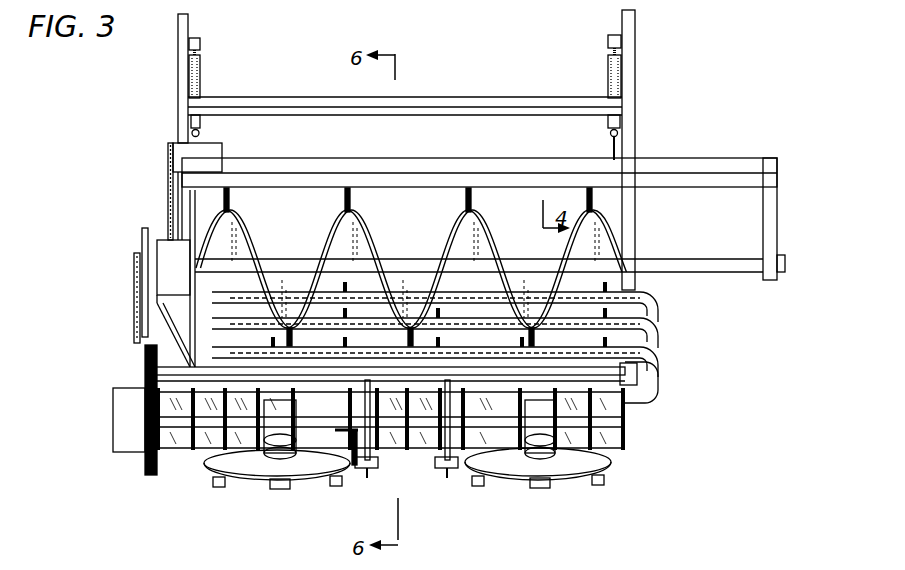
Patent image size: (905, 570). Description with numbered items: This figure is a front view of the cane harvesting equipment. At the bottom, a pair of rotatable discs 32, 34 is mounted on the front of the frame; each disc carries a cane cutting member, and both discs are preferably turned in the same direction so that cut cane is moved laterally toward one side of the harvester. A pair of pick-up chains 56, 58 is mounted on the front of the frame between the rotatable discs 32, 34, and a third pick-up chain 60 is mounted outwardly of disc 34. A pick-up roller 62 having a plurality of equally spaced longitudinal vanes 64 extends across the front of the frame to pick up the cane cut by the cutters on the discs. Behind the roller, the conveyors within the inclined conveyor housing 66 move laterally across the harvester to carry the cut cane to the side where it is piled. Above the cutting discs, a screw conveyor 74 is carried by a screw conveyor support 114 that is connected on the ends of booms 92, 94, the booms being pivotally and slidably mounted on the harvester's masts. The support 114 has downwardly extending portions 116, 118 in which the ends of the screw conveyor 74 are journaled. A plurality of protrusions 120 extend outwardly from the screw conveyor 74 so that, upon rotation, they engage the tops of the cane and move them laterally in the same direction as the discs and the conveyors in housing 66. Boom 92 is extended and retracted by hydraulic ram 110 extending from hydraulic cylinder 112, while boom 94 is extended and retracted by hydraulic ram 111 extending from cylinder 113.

The rotatable disc 32 is at (562, 467).
The rotatable disc 34 is at (282, 470).
The pick-up chain 56 is at (447, 478).
The pick-up chain 58 is at (368, 475).
The third pick-up chain 60 is at (158, 478).
The pick-up roller 62 is at (350, 432).
The longitudinal vanes 64 is at (492, 390).
The conveyor housing 66 is at (648, 352).
The screw conveyor 74 is at (388, 258).
The boom 92 is at (636, 152).
The boom 94 is at (177, 122).
The hydraulic ram 110 is at (607, 145).
The hydraulic ram 111 is at (205, 137).
The hydraulic cylinder 112 is at (607, 68).
The hydraulic cylinder 113 is at (205, 92).
The screw conveyor support 114 is at (446, 167).
The downwardly extending portion 116 is at (779, 238).
The downwardly extending portion 118 is at (180, 212).
The protrusions 120 is at (231, 203).